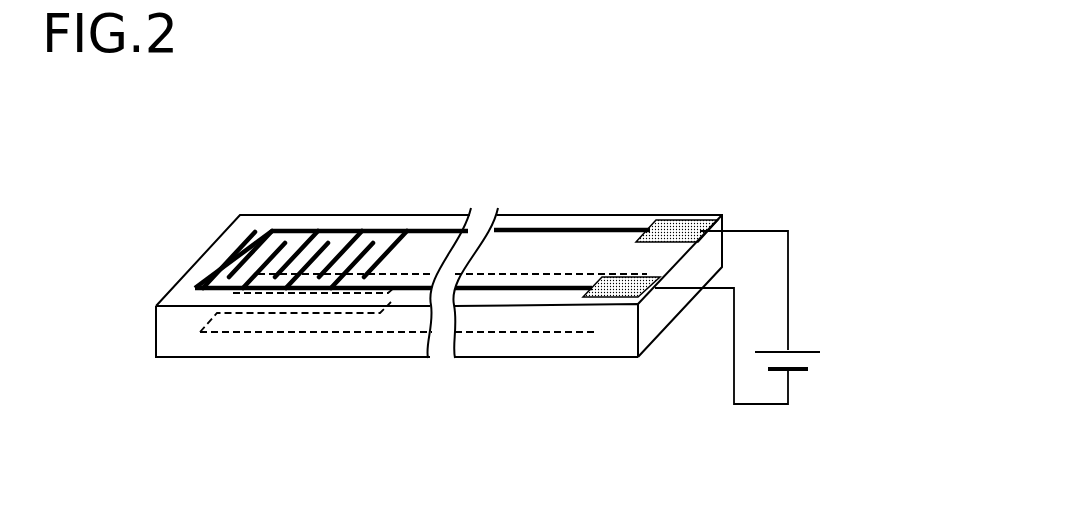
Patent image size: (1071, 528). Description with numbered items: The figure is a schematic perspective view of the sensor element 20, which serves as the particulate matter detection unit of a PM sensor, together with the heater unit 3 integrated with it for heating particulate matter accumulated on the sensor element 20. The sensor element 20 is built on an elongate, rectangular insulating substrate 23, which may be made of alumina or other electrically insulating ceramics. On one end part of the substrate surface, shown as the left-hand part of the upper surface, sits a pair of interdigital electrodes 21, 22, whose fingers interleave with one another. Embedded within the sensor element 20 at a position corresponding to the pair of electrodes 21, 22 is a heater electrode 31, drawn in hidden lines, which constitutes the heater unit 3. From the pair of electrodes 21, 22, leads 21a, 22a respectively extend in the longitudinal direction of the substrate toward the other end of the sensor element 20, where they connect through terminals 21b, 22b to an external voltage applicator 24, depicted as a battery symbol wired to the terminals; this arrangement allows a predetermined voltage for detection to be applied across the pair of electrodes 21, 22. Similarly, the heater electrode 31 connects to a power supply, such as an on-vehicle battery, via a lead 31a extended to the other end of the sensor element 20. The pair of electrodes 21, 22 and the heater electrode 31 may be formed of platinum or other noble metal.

The heater unit 3 is at (252, 351).
The sensor element 20 is at (478, 255).
The interdigital electrode 21 is at (234, 274).
The interdigital electrode 22 is at (263, 252).
The lead 21a is at (567, 287).
The lead 22a is at (508, 231).
The terminal 21b is at (614, 298).
The terminal 22b is at (673, 229).
The insulating substrate 23 is at (182, 333).
The external voltage applicator 24 is at (805, 359).
The heater electrode 31 is at (275, 333).
The lead 31a is at (490, 333).